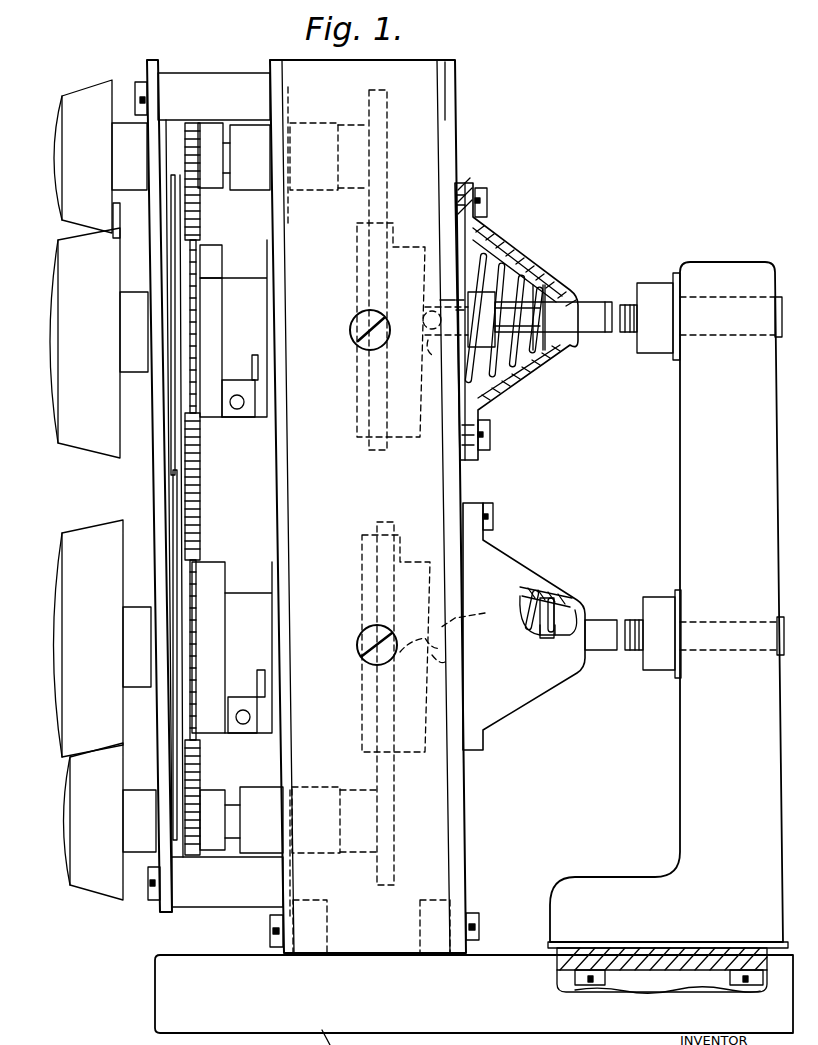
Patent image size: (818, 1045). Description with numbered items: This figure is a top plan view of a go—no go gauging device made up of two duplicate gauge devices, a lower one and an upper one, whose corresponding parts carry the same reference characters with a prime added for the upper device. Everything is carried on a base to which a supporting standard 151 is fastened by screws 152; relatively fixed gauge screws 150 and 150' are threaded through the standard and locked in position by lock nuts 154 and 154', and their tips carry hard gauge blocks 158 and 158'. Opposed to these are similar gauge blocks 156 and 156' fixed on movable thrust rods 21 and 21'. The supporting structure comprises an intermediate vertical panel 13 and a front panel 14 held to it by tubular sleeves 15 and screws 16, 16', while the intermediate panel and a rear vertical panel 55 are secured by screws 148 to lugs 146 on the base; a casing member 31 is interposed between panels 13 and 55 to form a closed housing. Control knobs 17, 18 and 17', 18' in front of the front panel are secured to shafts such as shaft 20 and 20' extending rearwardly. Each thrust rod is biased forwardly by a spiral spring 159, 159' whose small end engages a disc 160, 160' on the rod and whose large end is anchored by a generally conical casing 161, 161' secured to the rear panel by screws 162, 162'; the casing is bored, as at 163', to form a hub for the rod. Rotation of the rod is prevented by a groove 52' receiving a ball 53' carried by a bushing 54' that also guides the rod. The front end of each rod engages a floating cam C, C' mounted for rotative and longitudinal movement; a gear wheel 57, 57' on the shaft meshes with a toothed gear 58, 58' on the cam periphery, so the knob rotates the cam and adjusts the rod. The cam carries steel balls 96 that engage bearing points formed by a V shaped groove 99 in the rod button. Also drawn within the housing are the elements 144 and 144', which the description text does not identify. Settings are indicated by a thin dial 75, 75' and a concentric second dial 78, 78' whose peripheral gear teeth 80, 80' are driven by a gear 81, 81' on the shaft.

The intermediate vertical panel 13 is at (270, 68).
The front panel 14 is at (152, 72).
The tubular sleeves 15 is at (192, 75).
The screws 16 is at (139, 897).
The screws 16' is at (114, 100).
The control knob 17 is at (96, 632).
The control knob 17' is at (93, 337).
The control knob 18 is at (107, 830).
The control knob 18' is at (96, 149).
The shaft 20 is at (241, 820).
The shaft 20' is at (234, 156).
The thrust rod 21 is at (528, 618).
The thrust rod 21' is at (592, 302).
The casing member 31 is at (413, 62).
The groove 52' is at (422, 343).
The ball 53' is at (432, 309).
The bushing 54' is at (435, 280).
The rear vertical panel 55 is at (448, 80).
The gear wheel 57 is at (402, 703).
The gear wheel 57' is at (358, 264).
The toothed gear 58 is at (380, 634).
The toothed gear 58' is at (377, 344).
The dial 75 is at (153, 655).
The dial 75' is at (149, 325).
The second dial 78 is at (223, 647).
The second dial 78' is at (226, 258).
The gear teeth 80 is at (235, 647).
The gear teeth 80' is at (233, 328).
The gear 81 is at (205, 634).
The gear 81' is at (209, 268).
The steel ball 96 is at (418, 661).
The V shaped groove 99 is at (436, 671).
The screw 144 is at (354, 645).
The screw 144' is at (349, 330).
The lugs 146 is at (317, 910).
The screws 148 is at (270, 923).
The gauge screw 150 is at (644, 630).
The gauge screw 150' is at (638, 310).
The supporting standard 151 is at (686, 752).
The screws 152 is at (602, 985).
The lock nut 154 is at (663, 623).
The lock nut 154' is at (660, 307).
The gauge block 156 is at (618, 649).
The gauge block 156' is at (616, 331).
The gauge block 158 is at (637, 650).
The gauge block 158' is at (640, 332).
The spring 159 is at (556, 598).
The spring 159' is at (506, 304).
The disc 160 is at (549, 632).
The disc 160' is at (540, 317).
The conical casing 161 is at (524, 626).
The conical casing 161' is at (516, 319).
The screws 162 is at (498, 475).
The screws 162' is at (483, 229).
The bore 163' is at (564, 297).
The floating cam C is at (417, 532).
The floating cam C' is at (410, 226).